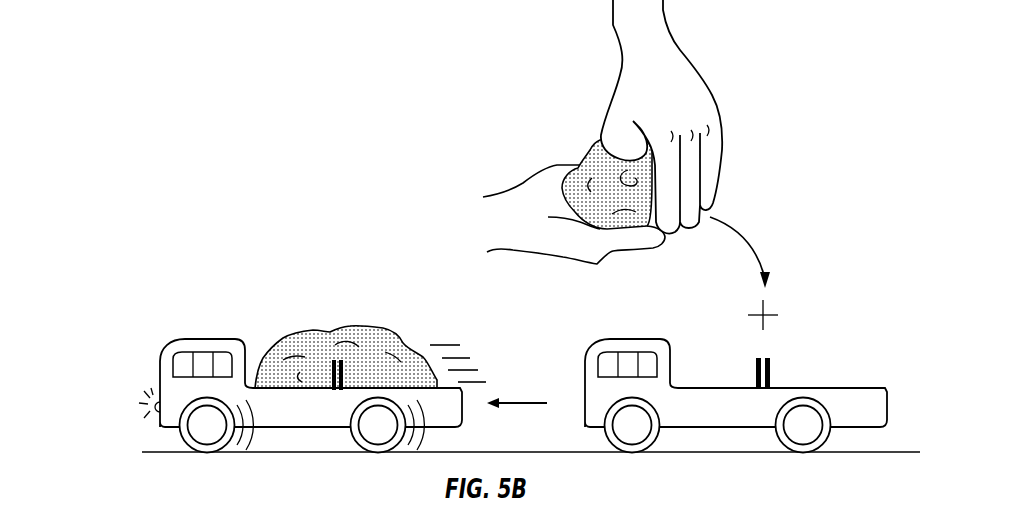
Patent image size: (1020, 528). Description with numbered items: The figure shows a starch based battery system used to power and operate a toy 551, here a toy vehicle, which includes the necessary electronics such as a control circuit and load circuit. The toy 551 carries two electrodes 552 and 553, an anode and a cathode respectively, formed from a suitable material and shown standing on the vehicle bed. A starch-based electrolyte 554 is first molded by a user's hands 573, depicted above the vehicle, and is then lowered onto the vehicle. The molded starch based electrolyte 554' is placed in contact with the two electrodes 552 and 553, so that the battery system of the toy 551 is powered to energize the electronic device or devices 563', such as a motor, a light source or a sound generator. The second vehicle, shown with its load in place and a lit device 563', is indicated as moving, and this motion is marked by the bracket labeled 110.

The starch-based electrolyte 554 is at (607, 162).
The user's hands 573 is at (718, 108).
The toy 551 is at (583, 337).
The electrode 552 is at (770, 358).
The electrode 553 is at (757, 358).
The molded starch based electrolyte 554' is at (346, 334).
The electronic device 563' is at (121, 397).
The motion 110 is at (495, 322).